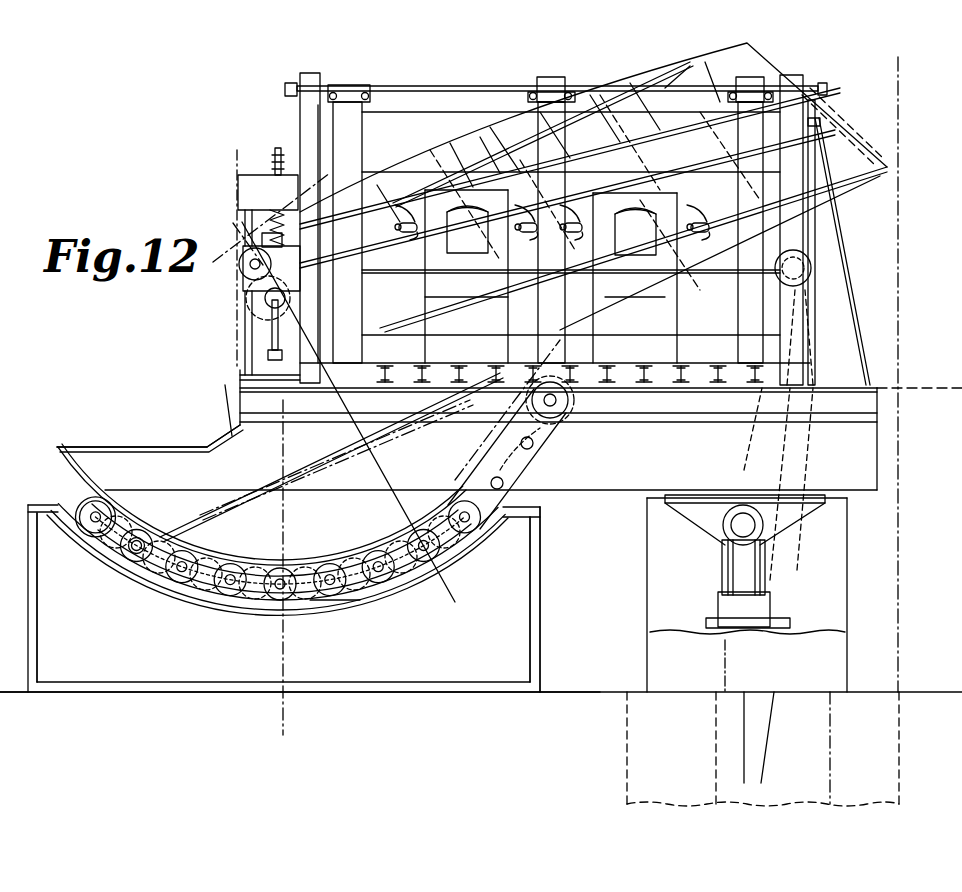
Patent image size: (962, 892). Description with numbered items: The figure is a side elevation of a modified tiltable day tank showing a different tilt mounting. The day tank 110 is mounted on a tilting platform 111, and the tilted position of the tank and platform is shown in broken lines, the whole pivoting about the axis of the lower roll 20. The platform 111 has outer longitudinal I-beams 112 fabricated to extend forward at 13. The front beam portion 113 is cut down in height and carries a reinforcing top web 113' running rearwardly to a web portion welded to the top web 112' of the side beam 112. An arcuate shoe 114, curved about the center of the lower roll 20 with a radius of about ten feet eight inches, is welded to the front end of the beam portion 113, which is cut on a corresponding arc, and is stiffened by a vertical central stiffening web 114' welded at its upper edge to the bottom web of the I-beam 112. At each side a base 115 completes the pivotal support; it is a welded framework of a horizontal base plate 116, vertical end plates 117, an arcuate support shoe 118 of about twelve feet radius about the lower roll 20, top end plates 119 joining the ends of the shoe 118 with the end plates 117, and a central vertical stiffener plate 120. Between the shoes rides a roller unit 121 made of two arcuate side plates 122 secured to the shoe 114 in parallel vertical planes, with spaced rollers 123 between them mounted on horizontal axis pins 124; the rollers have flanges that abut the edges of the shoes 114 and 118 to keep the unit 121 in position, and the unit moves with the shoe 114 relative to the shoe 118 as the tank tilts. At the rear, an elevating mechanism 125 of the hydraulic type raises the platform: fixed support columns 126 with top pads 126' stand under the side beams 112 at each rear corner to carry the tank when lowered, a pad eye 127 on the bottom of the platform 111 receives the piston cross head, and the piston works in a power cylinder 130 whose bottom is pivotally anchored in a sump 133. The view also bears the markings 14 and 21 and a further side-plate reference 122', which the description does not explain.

The day tank 110 is at (295, 125).
The tilting platform 111 is at (596, 498).
The outer longitudinal I-beam 112 is at (214, 410).
The top web 112' is at (331, 457).
The beam portion 113 is at (150, 434).
The reinforcing top web 113' is at (132, 426).
The arcuate shoe 114 is at (262, 505).
The central stiffening web 114' is at (278, 557).
The base 115 is at (575, 618).
The horizontal base plate 116 is at (318, 694).
The vertical end plates 117 is at (75, 590).
The arcuate support shoe 118 is at (378, 590).
The top end plates 119 is at (40, 530).
The stiffener plate 120 is at (446, 656).
The roller unit 121 is at (358, 605).
The arcuate side plates 122 is at (511, 460).
The end roller 122' is at (72, 510).
The rollers 123 is at (175, 590).
The horizontal axis pins 124 is at (175, 522).
The elevating mechanism 125 is at (712, 595).
The support columns 126 is at (768, 595).
The pads 126' is at (762, 484).
The pad eye 127 is at (710, 510).
The power cylinder 130 is at (818, 603).
The sump 133 is at (630, 745).
The section line 14 is at (238, 290).
The forward extension 13 is at (950, 85).
The lower roll 20 is at (278, 287).
The spring device 21 is at (300, 252).